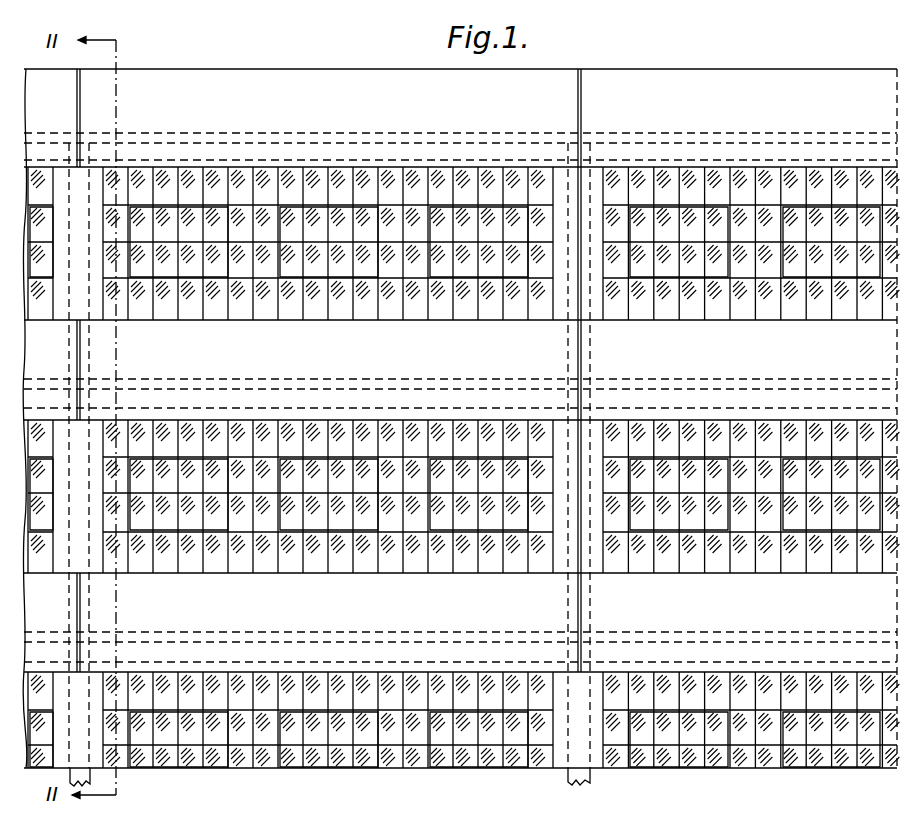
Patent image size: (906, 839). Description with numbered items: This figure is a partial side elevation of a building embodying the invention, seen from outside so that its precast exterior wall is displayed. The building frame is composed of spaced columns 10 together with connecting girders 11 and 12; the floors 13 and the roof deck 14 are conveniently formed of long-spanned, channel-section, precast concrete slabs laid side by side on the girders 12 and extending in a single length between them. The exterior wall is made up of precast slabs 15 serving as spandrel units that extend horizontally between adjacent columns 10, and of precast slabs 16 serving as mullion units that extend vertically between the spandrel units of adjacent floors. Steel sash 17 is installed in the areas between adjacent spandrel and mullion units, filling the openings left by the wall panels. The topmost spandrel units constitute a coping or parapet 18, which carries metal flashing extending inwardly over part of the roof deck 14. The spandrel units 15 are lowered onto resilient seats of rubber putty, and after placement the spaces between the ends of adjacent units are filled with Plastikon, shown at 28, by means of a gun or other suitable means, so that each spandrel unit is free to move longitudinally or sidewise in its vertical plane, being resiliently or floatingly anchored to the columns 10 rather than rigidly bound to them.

The column 10 is at (70, 340).
The girder 11 is at (378, 395).
The girder 12 is at (323, 150).
The floor 13 is at (427, 383).
The roof deck 14 is at (399, 140).
The precast slab (spandrel unit) 15 is at (313, 354).
The precast slab (mullion unit) 16 is at (63, 307).
The steel sash 17 is at (243, 177).
The coping or parapet 18 is at (351, 80).
The Plastikon filling 28 is at (80, 368).